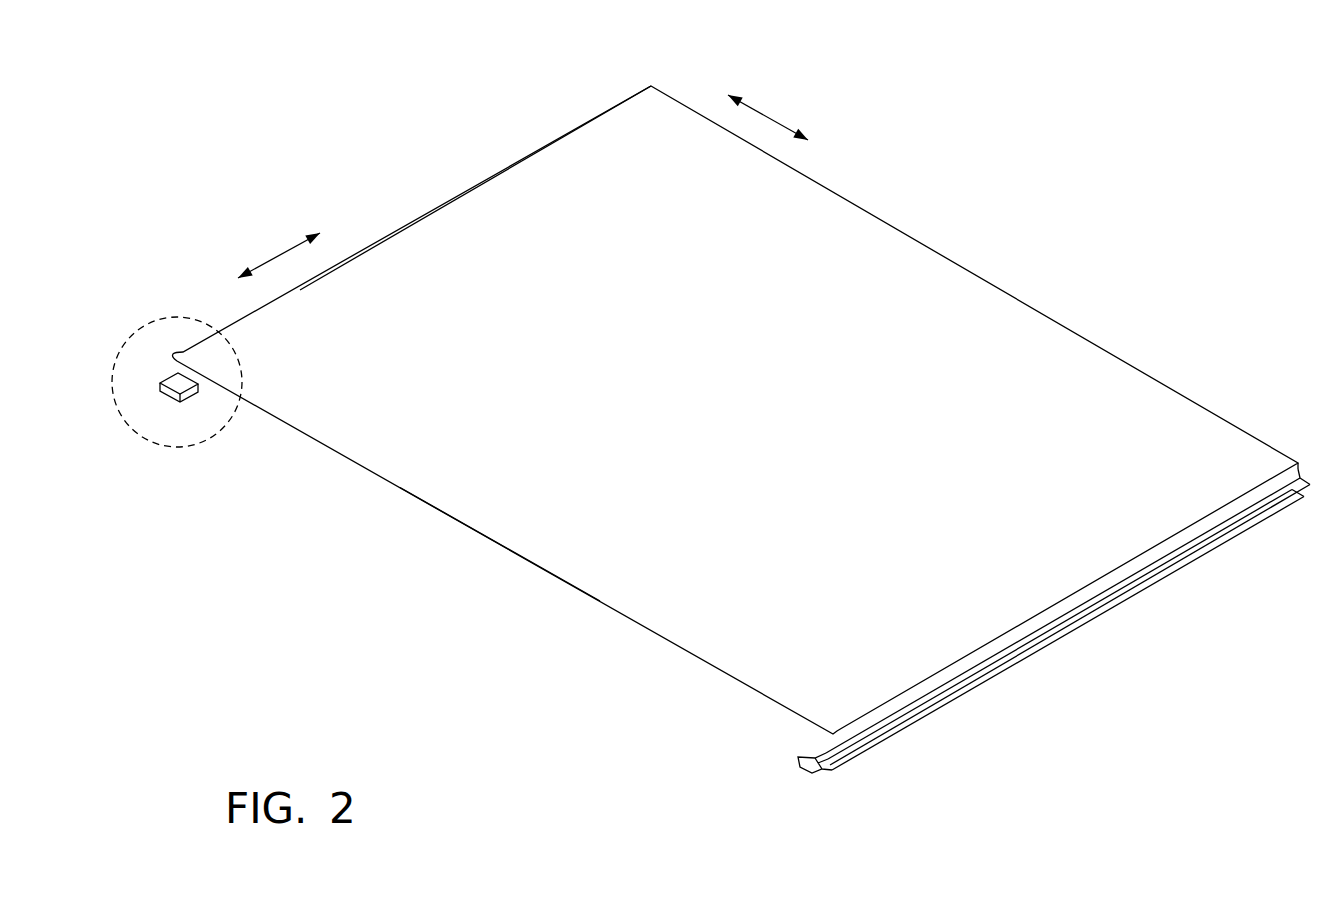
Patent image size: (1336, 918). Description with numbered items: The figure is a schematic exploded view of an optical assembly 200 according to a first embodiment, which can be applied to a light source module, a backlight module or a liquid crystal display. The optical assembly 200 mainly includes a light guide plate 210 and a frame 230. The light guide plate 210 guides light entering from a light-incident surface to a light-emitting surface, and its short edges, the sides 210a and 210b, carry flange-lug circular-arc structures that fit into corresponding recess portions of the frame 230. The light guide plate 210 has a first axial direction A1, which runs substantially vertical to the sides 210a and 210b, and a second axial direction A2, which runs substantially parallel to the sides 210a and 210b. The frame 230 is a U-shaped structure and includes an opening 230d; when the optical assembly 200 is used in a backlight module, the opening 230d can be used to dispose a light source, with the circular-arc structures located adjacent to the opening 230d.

The optical assembly 200 is at (178, 300).
The light guide plate 210 is at (513, 185).
The side of the light guide plate 210a is at (487, 178).
The side of the light guide plate 210b is at (1153, 550).
The frame 230 is at (200, 385).
The opening 230d is at (485, 558).
The first axial direction A1 is at (770, 115).
The second axial direction A2 is at (280, 252).